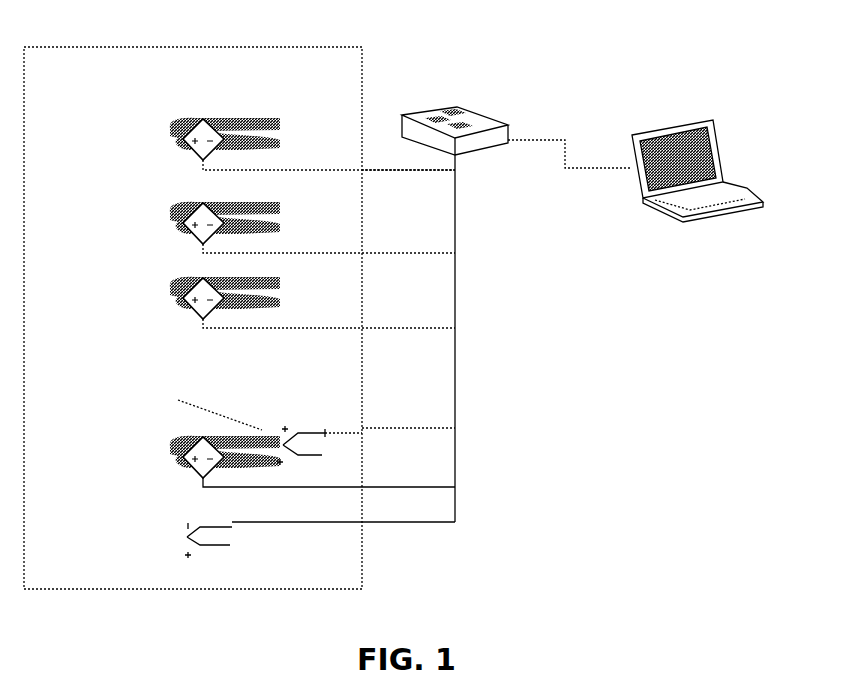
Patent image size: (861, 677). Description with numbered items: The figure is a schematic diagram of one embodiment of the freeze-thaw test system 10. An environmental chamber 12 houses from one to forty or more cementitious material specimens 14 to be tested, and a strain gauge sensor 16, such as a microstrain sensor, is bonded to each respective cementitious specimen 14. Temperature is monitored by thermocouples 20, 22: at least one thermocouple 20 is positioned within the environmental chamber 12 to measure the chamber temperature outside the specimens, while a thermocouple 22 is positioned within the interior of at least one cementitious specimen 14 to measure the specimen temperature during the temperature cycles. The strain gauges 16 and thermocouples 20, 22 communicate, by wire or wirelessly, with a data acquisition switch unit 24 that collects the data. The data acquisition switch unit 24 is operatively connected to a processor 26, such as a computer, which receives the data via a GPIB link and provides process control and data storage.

The freeze-thaw test system 10 is at (547, 382).
The environmental chamber 12 is at (256, 68).
The cementitious material specimen 14 is at (255, 121).
The strain gauge sensor 16 is at (196, 153).
The thermocouple 20 is at (210, 548).
The thermocouple 22 is at (305, 430).
The data acquisition switch unit 24 is at (490, 120).
The processor 26 is at (745, 190).